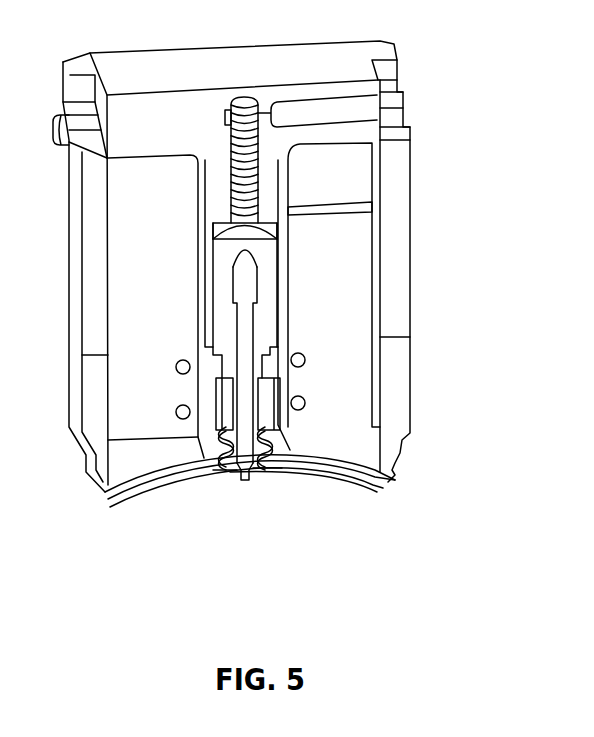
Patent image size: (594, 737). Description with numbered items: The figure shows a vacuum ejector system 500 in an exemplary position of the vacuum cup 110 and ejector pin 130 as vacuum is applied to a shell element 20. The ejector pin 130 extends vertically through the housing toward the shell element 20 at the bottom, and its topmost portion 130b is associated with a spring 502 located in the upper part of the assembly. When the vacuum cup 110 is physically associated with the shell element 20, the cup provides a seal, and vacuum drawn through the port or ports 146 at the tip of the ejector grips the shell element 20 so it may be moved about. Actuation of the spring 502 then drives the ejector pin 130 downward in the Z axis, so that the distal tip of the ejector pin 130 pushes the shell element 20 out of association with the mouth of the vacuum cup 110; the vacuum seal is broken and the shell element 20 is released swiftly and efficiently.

The valve assembly 500 is at (552, 19).
The spring 502 is at (250, 192).
The topmost portion of the ejector pin 130b is at (258, 255).
The ejector pin 130 is at (245, 470).
The port 146 is at (247, 447).
The vacuum cup 110 is at (272, 465).
The shell element 20 is at (163, 483).